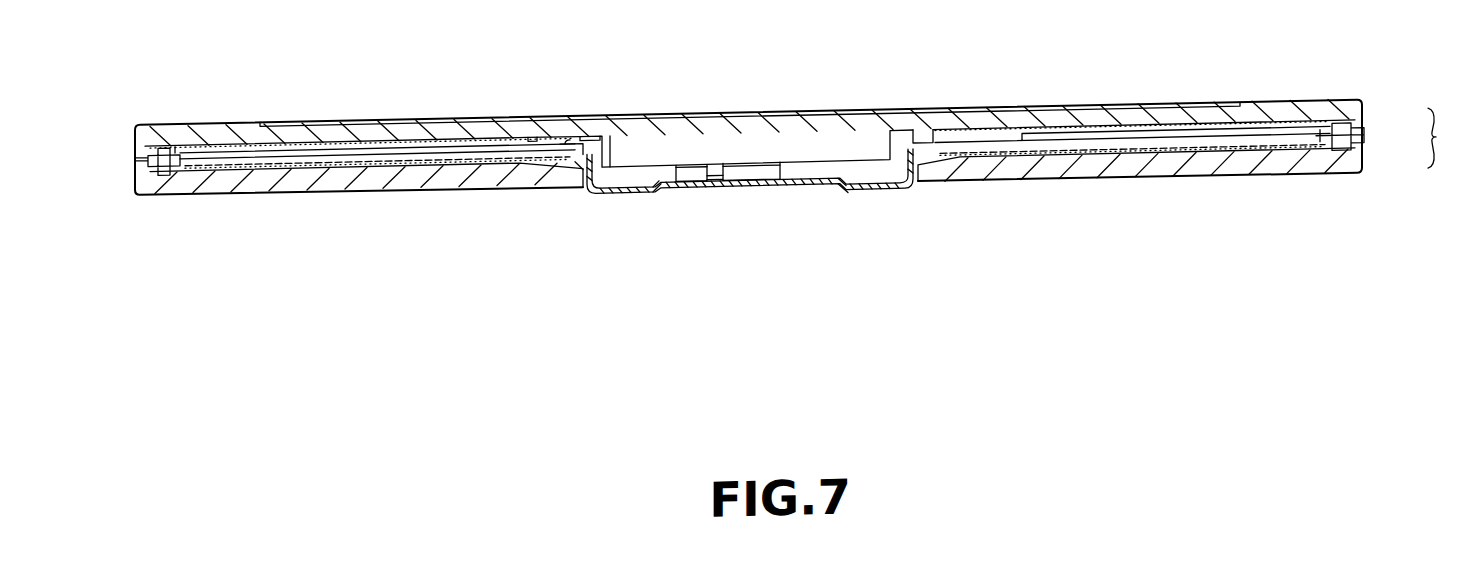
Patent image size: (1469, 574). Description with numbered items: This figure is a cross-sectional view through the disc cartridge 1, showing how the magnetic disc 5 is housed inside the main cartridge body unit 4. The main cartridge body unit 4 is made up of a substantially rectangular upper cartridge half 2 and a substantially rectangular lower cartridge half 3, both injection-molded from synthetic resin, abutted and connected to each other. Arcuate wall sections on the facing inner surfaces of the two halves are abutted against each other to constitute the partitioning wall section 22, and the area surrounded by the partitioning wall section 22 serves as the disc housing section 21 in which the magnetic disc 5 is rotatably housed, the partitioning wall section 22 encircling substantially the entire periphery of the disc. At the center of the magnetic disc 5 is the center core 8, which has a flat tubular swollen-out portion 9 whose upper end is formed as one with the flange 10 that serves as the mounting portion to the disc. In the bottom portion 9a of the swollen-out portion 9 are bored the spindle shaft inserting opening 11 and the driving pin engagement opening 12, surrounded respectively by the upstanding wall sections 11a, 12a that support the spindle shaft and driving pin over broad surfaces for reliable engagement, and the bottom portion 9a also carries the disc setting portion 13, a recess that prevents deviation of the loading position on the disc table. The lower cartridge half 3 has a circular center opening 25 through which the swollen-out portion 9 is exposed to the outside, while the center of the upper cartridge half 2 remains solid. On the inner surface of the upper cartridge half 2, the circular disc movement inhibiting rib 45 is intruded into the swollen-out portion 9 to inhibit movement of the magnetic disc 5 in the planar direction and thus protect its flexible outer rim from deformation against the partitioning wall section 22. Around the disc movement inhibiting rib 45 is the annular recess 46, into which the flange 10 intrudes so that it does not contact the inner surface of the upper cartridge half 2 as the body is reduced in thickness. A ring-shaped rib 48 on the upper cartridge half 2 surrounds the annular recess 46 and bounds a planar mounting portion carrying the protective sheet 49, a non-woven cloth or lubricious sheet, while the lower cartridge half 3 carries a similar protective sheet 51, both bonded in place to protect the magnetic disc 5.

The disc cartridge 1 is at (1290, 118).
The upper cartridge half 2 is at (1356, 149).
The lower cartridge half 3 is at (1356, 189).
The main cartridge body unit 4 is at (1444, 181).
The magnetic disc 5 is at (953, 169).
The center core 8 is at (628, 208).
The swollen-out portion 9 is at (598, 211).
The bottom portion 9a is at (652, 207).
The flange 10 is at (928, 99).
The spindle shaft inserting opening 11 is at (766, 205).
The upstanding wall section 11a is at (758, 183).
The driving pin engagement opening 12 is at (698, 199).
The upstanding wall section 12a is at (690, 182).
The disc setting portion 13 is at (832, 209).
The disc housing section 21 is at (293, 153).
The partitioning wall section 22 is at (170, 164).
The center opening 25 is at (583, 203).
The disc movement inhibiting rib 45 is at (612, 171).
The annular recess 46 is at (589, 152).
The ring-shaped rib 48 is at (543, 150).
The protective sheet 49 is at (207, 158).
The protective sheet 51 is at (277, 176).